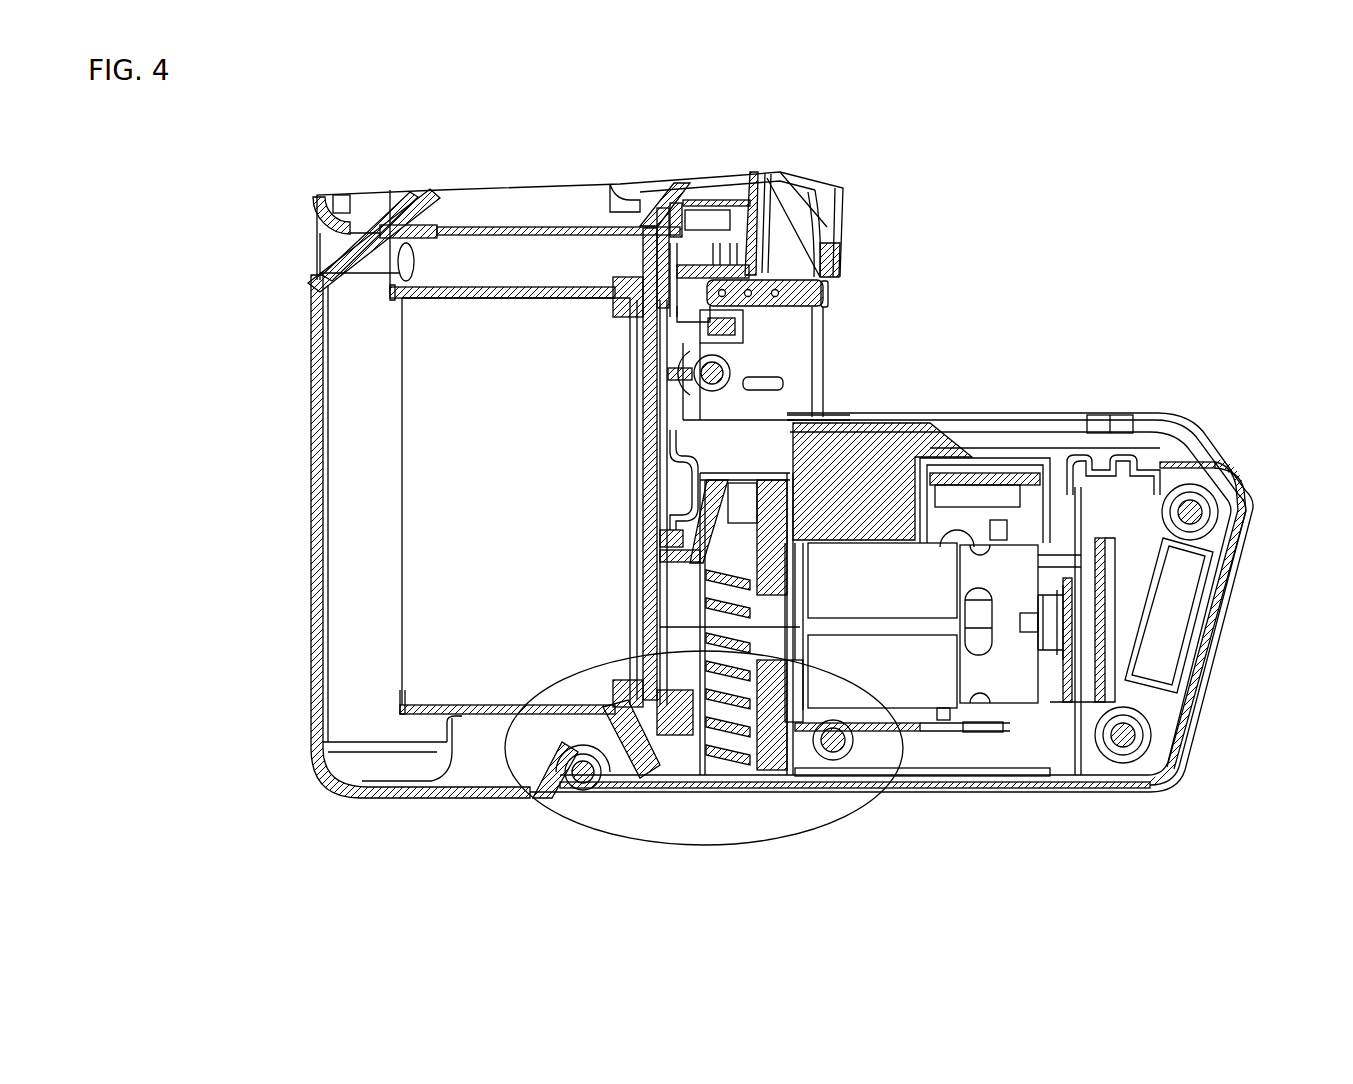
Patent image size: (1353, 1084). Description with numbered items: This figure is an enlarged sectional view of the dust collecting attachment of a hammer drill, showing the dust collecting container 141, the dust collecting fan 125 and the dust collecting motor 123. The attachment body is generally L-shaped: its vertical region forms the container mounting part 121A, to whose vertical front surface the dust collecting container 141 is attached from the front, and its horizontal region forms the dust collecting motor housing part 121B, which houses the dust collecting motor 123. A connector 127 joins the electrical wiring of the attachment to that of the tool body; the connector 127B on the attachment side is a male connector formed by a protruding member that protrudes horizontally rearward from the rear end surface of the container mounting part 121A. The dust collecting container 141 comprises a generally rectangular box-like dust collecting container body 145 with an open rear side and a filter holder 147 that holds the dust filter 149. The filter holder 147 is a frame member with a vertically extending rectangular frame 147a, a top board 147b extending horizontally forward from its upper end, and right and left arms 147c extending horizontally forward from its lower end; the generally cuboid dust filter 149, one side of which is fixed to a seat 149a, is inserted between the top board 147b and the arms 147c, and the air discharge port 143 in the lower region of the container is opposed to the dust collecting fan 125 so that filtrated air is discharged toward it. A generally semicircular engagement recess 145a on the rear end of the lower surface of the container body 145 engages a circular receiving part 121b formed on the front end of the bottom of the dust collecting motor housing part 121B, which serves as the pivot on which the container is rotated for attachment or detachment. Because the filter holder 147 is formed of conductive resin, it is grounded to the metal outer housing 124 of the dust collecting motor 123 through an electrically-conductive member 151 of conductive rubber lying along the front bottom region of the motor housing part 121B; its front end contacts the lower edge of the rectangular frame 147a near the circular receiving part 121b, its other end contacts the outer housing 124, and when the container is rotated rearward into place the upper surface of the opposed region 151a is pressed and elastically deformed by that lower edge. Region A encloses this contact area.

The container mounting part 121A is at (826, 334).
The dust collecting motor housing part 121B is at (1222, 455).
The circular receiving part 121b is at (578, 792).
The dust collecting motor 123 is at (927, 703).
The outer housing 124 is at (803, 690).
The dust collecting fan 125 is at (745, 745).
The connector 127 is at (785, 266).
The connector on the dust collecting attachment side 127B is at (824, 288).
The dust collecting container 141 is at (308, 357).
The air discharge port 143 is at (657, 614).
The dust collecting container body 145 is at (313, 440).
The engagement recess 145a is at (610, 713).
The filter holder 147 is at (513, 284).
The rectangular frame 147a is at (633, 280).
The top board 147b is at (455, 287).
The arms 147c is at (462, 718).
The dust filter 149 is at (416, 528).
The seat 149a is at (730, 366).
The electrically-conductive member 151 is at (800, 770).
The opposed region 151a is at (635, 785).
The region A is at (655, 848).